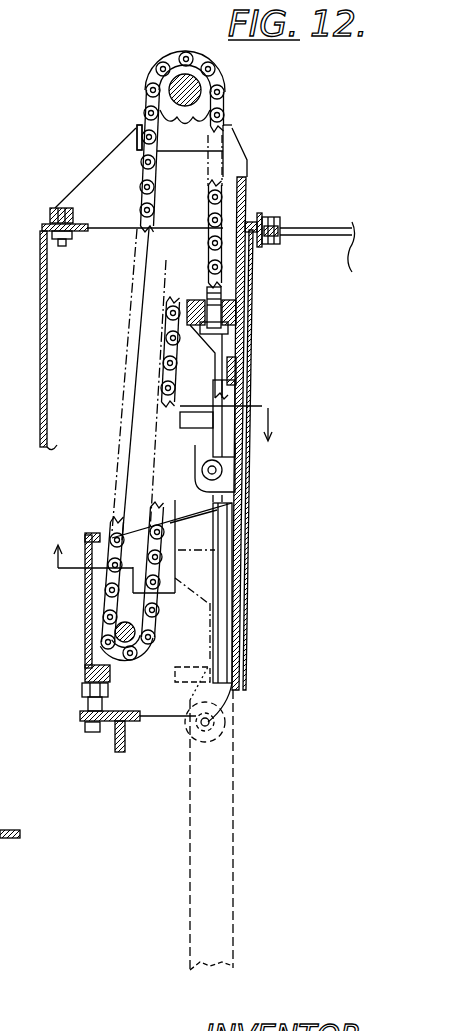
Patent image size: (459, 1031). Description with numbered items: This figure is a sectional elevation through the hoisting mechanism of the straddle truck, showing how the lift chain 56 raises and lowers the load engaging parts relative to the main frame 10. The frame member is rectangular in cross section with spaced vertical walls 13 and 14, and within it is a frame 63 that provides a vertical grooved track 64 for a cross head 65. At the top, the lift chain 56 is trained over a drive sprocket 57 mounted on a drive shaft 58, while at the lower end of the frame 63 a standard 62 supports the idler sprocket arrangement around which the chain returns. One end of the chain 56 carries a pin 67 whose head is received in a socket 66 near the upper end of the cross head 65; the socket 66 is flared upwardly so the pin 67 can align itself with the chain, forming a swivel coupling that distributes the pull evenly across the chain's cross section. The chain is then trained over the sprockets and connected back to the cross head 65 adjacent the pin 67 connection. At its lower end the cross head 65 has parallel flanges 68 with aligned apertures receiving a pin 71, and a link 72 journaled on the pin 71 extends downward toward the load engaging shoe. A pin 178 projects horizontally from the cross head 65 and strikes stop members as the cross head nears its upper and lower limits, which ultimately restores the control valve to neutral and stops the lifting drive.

The main frame 10 is at (358, 272).
The vertical wall 13 is at (41, 326).
The vertical wall 14 is at (246, 308).
The lift chain 56 is at (147, 166).
The drive sprocket 57 is at (147, 124).
The drive shaft 58 is at (214, 84).
The standard 62 is at (100, 598).
The frame 63 is at (88, 536).
The grooved track 64 is at (226, 568).
The cross head 65 is at (238, 368).
The socket 66 is at (196, 303).
The pin 67 is at (236, 334).
The parallel flanges 68 is at (222, 478).
The pin 71 is at (210, 722).
The link 72 is at (233, 875).
The pin 178 is at (162, 419).